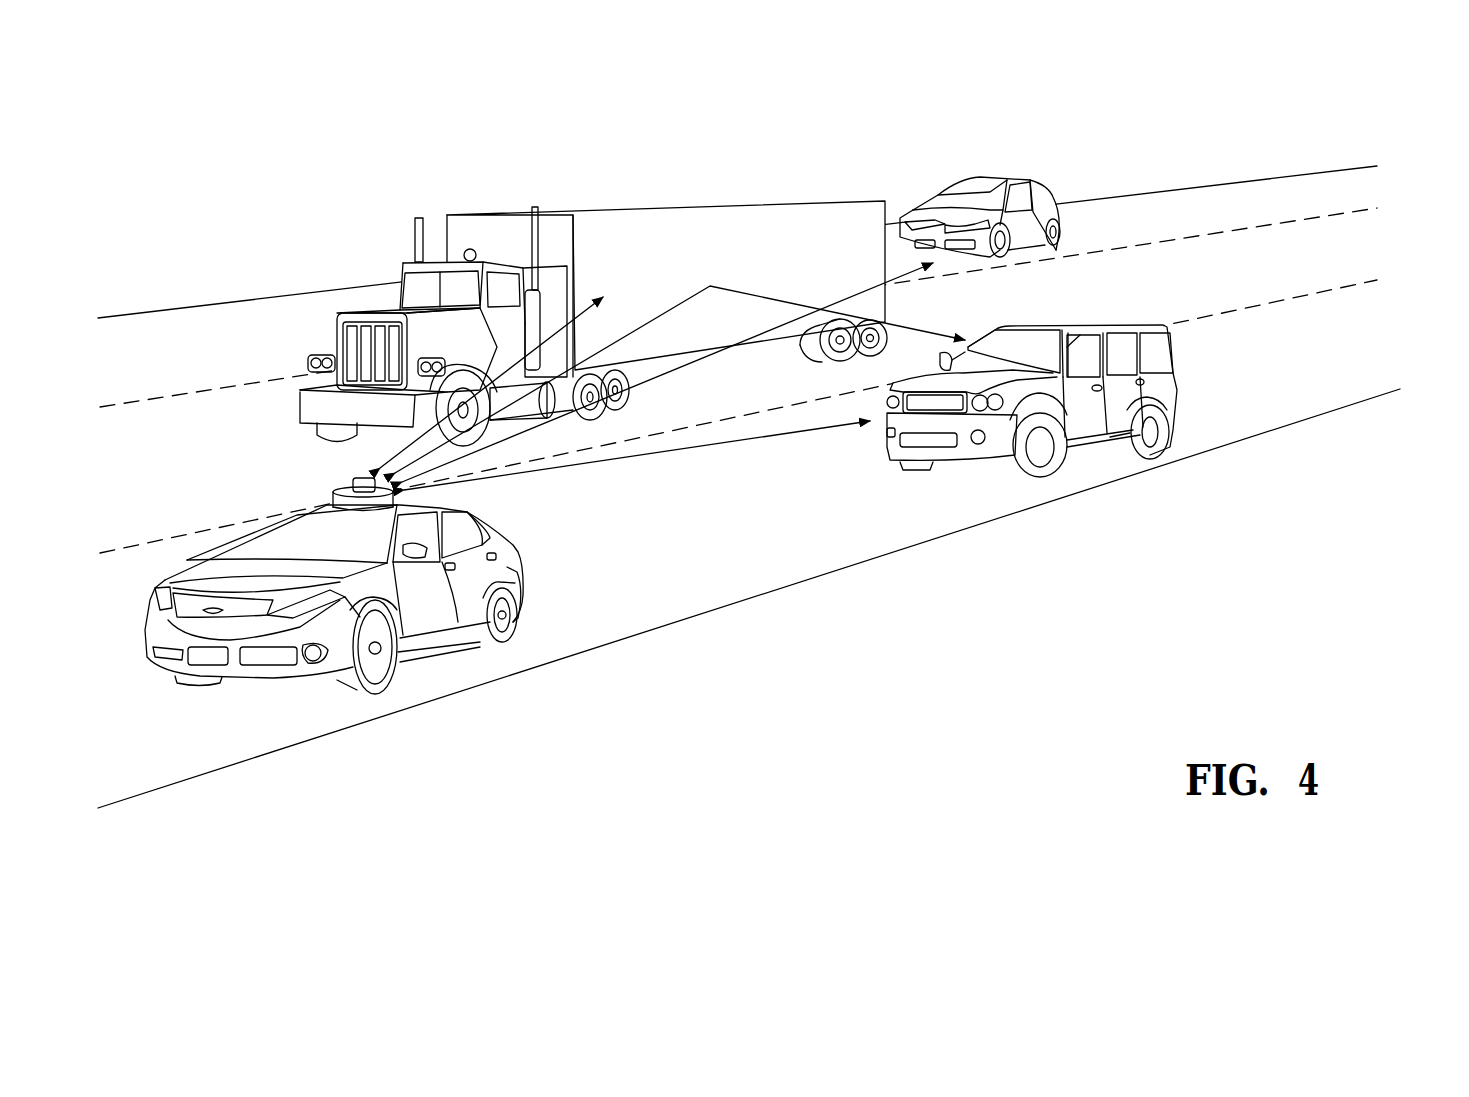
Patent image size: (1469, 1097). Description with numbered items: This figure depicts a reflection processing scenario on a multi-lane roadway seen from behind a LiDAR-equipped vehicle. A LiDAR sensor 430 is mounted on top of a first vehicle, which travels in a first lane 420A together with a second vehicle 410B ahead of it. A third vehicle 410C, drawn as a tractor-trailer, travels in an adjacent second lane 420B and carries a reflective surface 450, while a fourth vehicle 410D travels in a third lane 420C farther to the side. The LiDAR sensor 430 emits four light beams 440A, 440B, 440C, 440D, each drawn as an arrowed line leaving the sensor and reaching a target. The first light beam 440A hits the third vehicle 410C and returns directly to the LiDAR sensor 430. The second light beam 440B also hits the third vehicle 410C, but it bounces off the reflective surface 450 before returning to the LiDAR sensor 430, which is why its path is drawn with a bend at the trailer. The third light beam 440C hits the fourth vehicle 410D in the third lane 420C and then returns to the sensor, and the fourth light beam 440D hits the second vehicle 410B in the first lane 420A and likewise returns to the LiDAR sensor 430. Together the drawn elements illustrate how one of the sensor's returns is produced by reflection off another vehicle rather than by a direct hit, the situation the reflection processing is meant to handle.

The second vehicle 410B is at (1113, 322).
The third vehicle 410C is at (382, 307).
The fourth vehicle 410D is at (1018, 180).
The first lane 420A is at (1312, 350).
The second lane 420B is at (1363, 250).
The third lane 420C is at (1270, 200).
The LiDAR sensor 430 is at (338, 488).
The first light beam 440A is at (597, 300).
The second light beam 440B is at (775, 295).
The third light beam 440C is at (853, 295).
The fourth light beam 440D is at (800, 433).
The reflective surface 450 is at (700, 240).